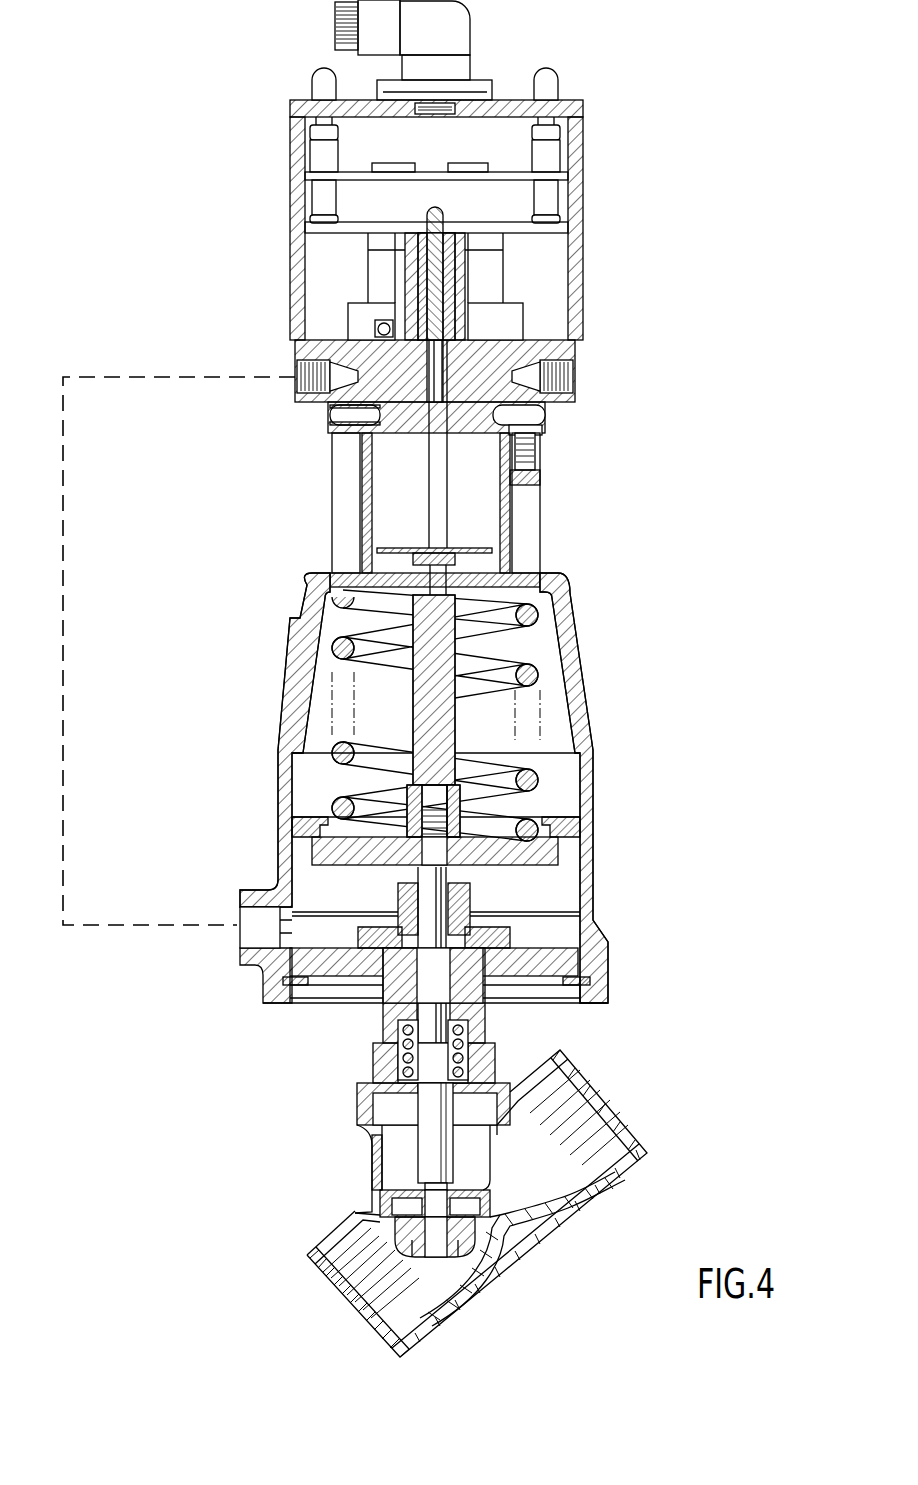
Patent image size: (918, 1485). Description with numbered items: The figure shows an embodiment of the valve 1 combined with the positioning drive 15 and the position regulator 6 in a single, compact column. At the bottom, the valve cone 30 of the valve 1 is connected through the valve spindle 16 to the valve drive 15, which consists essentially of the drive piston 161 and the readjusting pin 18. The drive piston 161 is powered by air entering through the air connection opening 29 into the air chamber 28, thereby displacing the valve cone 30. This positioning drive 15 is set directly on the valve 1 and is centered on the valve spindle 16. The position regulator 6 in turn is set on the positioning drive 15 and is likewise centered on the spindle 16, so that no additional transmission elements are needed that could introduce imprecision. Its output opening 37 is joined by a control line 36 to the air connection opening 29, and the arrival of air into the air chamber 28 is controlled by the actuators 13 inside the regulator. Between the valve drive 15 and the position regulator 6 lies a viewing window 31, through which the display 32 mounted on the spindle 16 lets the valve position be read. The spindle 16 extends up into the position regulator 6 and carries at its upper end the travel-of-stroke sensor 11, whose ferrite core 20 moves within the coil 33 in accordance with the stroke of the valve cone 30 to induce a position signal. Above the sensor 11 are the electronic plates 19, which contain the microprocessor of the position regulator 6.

The valve 1 is at (603, 1113).
The position regulator 6 is at (267, 200).
The travel-of-stroke sensor 11 is at (455, 302).
The actuators 13 is at (360, 322).
The positioning drive 15 is at (612, 707).
The valve spindle 16 is at (437, 1022).
The readjusting pin 18 is at (545, 788).
The electronic plates 19 is at (510, 178).
The ferrite core 20 is at (465, 258).
The air chamber 28 is at (317, 883).
The air connection opening 29 is at (243, 933).
The valve cone 30 is at (418, 1220).
The viewing window 31 is at (480, 503).
The display 32 is at (480, 548).
The coil 33 is at (430, 270).
The control line 36 is at (63, 565).
The output opening 37 is at (297, 385).
The drive piston 161 is at (557, 865).